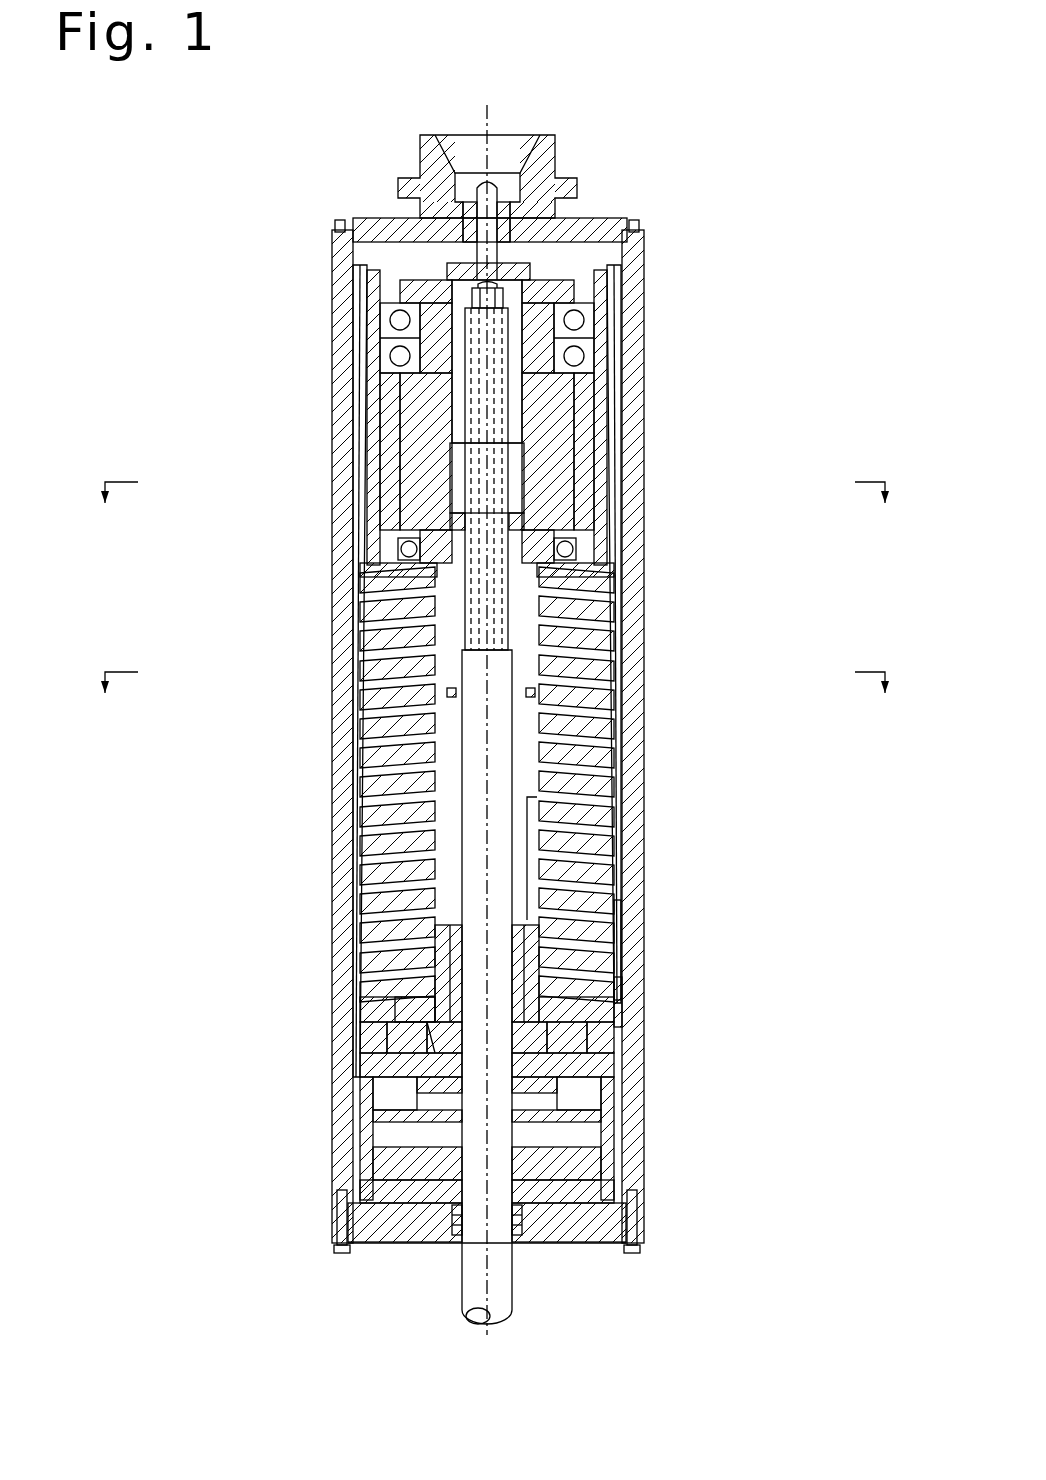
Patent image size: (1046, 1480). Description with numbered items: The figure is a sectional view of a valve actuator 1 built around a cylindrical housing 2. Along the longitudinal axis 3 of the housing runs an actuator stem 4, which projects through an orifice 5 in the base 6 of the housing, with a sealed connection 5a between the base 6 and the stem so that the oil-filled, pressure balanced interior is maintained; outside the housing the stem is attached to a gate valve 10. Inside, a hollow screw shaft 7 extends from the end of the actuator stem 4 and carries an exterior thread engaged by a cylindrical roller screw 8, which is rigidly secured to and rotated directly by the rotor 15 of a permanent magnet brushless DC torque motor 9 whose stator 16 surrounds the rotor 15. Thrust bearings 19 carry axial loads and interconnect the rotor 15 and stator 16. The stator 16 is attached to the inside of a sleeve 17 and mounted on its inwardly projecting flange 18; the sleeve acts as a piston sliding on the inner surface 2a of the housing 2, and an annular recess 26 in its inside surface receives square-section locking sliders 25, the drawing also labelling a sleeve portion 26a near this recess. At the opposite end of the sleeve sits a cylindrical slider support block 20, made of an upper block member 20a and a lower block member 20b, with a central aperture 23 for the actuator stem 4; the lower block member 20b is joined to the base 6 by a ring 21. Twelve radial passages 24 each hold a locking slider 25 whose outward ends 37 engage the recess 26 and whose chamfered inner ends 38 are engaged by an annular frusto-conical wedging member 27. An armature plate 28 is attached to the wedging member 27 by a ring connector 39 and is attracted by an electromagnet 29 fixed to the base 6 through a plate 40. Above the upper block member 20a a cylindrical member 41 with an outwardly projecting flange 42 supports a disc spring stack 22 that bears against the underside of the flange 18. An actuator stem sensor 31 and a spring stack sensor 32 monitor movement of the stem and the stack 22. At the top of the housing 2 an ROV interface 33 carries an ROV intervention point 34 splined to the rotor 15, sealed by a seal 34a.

The valve actuator 1 is at (283, 207).
The cylindrical housing 2 is at (328, 770).
The inner surface 2a is at (640, 1242).
The longitudinal axis 3 is at (486, 707).
The actuator stem 4 is at (458, 745).
The orifice 5 is at (460, 1247).
The sealed connection 5a is at (520, 1233).
The base 6 is at (600, 1245).
The hollow screw shaft 7 is at (470, 583).
The roller screw 8 is at (485, 480).
The permanent magnet brushless DC torque motor 9 is at (432, 515).
The gate valve 10 is at (491, 707).
The rotor 15 is at (543, 385).
The stator 16 is at (598, 415).
The sleeve 17 is at (614, 460).
The inwardly projecting flange 18 is at (597, 550).
The thrust bearings 19 is at (600, 318).
The slider support block 20 is at (358, 1027).
The upper block member 20a is at (387, 1036).
The lower block member 20b is at (364, 1085).
The ring 21 is at (364, 1143).
The disc spring stack 22 is at (578, 723).
The central aperture 23 is at (427, 1047).
The passages 24 is at (535, 1007).
The locking sliders 25 is at (554, 1102).
The annular recess 26 is at (348, 925).
The sleeve portion 26a is at (610, 938).
The frusto-conical wedging member 27 is at (618, 978).
The armature plate 28 is at (560, 1165).
The electromagnet 29 is at (610, 1198).
The actuator stem sensor 31 is at (449, 690).
The spring stack sensor 32 is at (535, 690).
The ROV interface 33 is at (420, 188).
The ROV intervention point 34 is at (496, 182).
The seal 34a is at (505, 222).
The outward ends 37 is at (590, 1066).
The chamfered inner ends 38 is at (403, 1005).
The ring connector 39 is at (535, 1120).
The plate 40 is at (423, 1197).
The cylindrical member 41 is at (527, 918).
The outwardly projecting flange 42 is at (445, 1010).